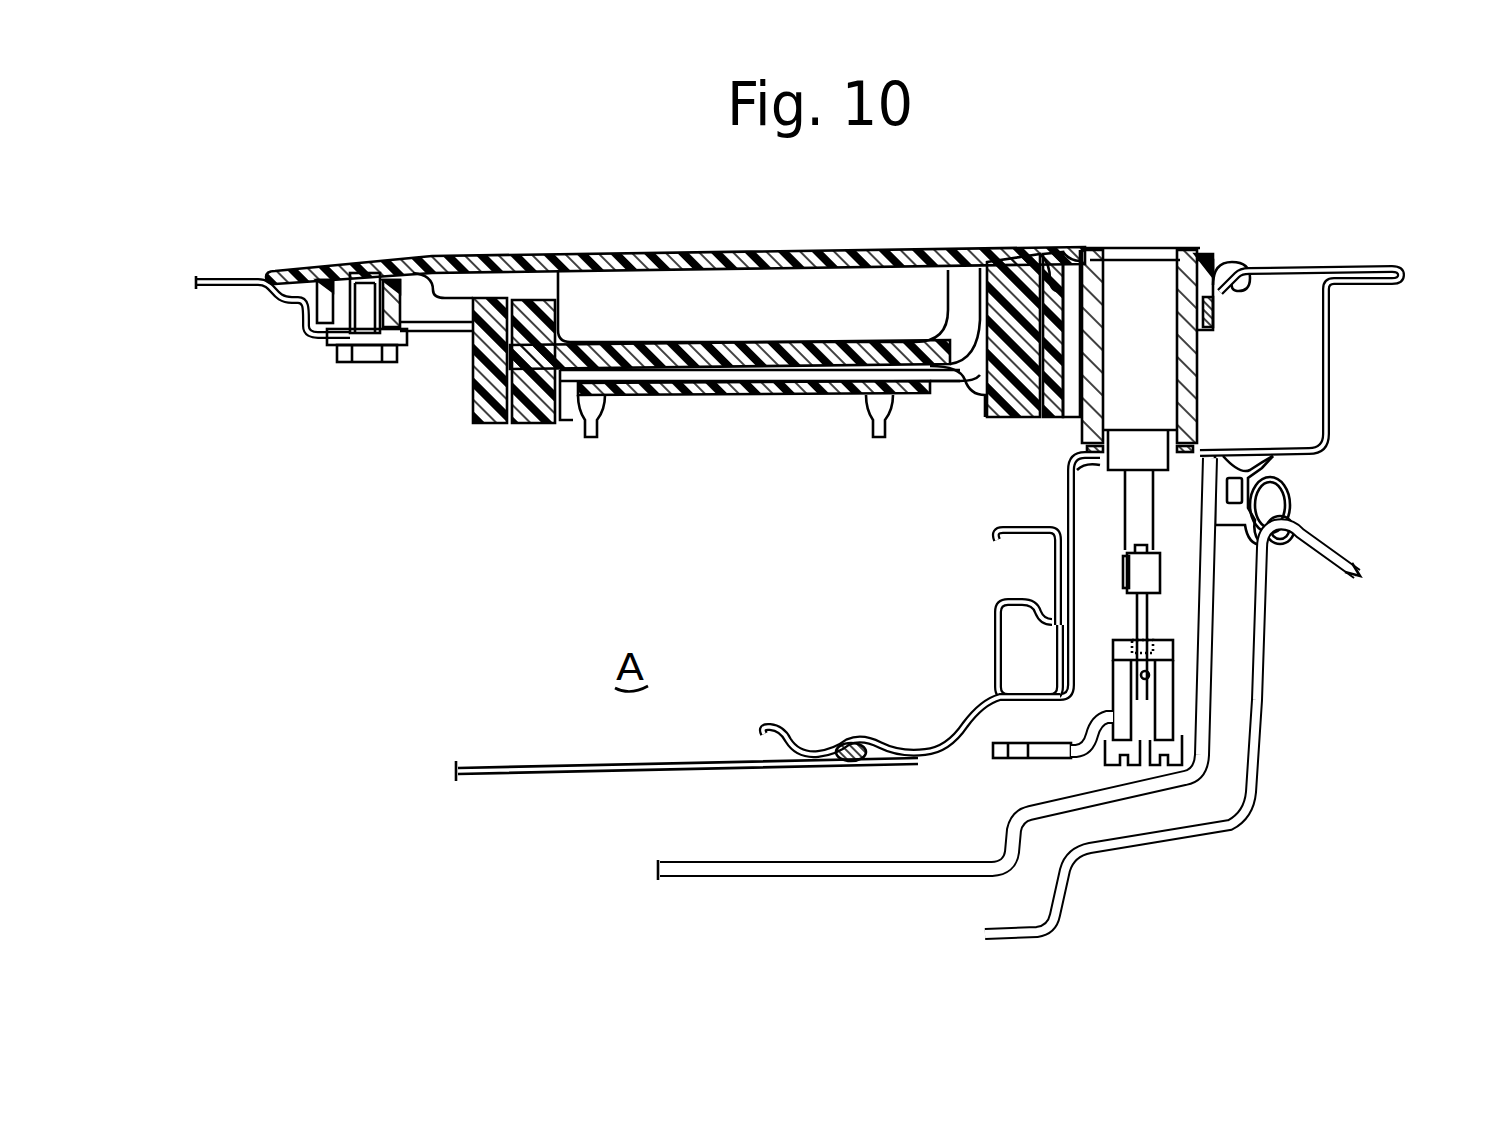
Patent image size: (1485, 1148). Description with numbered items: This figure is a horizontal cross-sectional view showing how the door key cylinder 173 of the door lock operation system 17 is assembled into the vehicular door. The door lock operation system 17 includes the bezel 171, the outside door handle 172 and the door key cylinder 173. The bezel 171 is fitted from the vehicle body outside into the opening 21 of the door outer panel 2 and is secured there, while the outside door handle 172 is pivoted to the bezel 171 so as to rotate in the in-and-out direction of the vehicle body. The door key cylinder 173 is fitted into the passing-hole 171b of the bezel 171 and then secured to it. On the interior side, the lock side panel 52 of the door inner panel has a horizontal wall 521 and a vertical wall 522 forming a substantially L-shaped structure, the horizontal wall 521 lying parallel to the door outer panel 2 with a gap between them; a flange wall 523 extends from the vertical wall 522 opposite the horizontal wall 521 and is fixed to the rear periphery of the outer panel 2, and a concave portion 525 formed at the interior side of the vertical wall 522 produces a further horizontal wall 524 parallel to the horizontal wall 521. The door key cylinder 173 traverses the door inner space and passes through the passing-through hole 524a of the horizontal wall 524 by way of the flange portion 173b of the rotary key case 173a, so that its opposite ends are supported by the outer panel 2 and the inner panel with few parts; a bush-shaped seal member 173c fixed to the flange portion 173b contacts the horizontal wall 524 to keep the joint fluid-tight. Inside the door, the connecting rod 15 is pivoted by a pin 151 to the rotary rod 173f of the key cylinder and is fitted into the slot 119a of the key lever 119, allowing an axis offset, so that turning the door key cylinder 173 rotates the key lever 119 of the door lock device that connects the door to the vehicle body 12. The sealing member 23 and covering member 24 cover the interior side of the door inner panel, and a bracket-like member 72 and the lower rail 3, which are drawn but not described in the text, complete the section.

The door outer panel 2 is at (232, 280).
The rail 3 is at (838, 876).
The vehicle body 12 is at (1250, 808).
The connecting rod 15 is at (1143, 613).
The door lock operation system 17 is at (959, 241).
The opening 21 is at (1167, 447).
The sealing member 23 is at (853, 761).
The covering member 24 is at (562, 770).
The lock side panel 52 is at (1333, 419).
The holder 72 is at (1000, 606).
The key lever 119 is at (1062, 753).
The slot 119a is at (1150, 678).
The pin 151 is at (1160, 573).
The bezel 171 is at (718, 396).
The passing-hole 171b is at (1092, 261).
The outside door handle 172 is at (681, 250).
The door key cylinder 173 is at (1130, 245).
The rotary key case 173a is at (1167, 280).
The flange portion 173b is at (1075, 484).
The seal member 173c is at (1060, 469).
The rotary rod 173f is at (1290, 494).
The horizontal wall 521 is at (932, 748).
The vertical wall 522 is at (1330, 366).
The flange wall 523 is at (1392, 268).
The horizontal wall 524 is at (1252, 467).
The passing-through hole 524a is at (1243, 447).
The concave portion 525 is at (1062, 582).